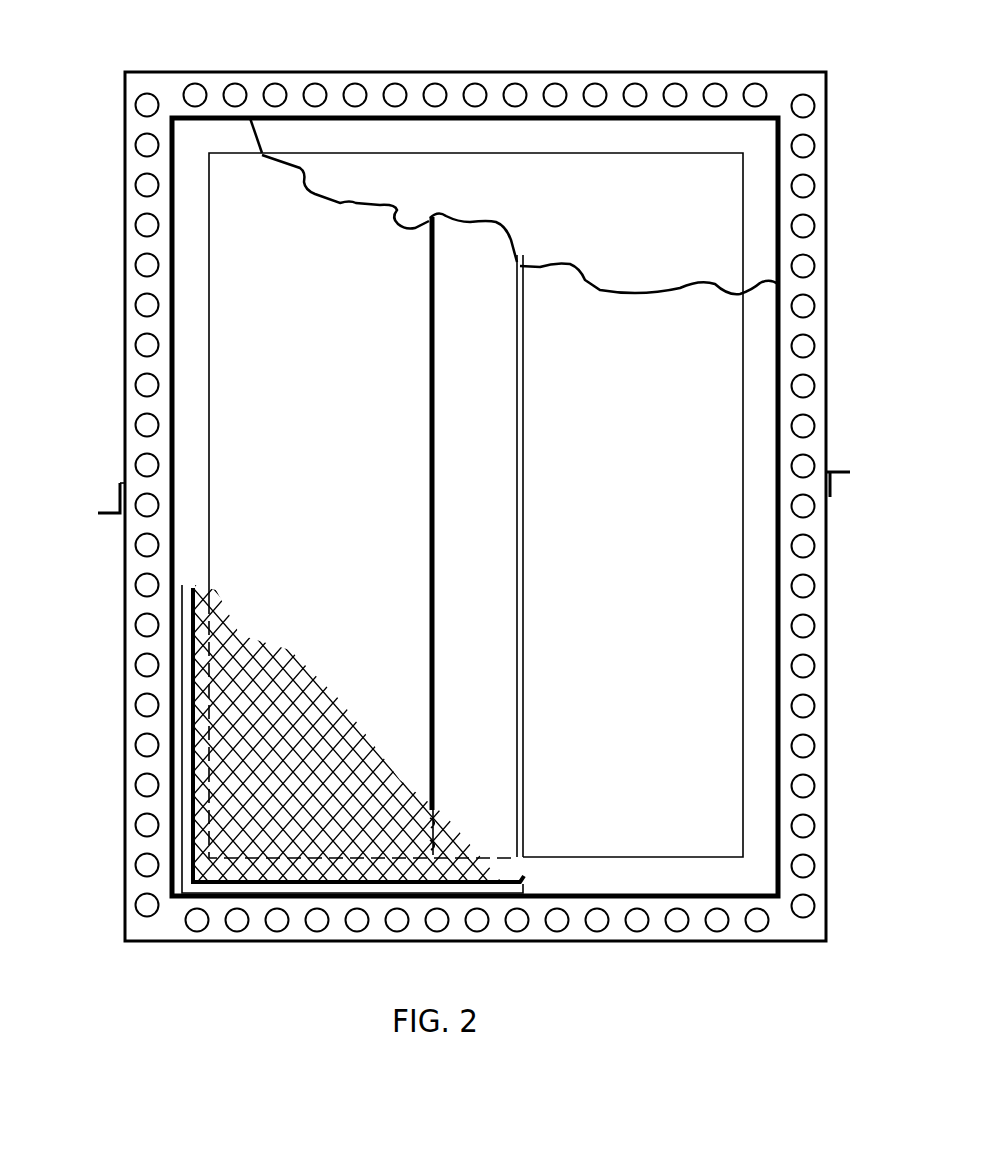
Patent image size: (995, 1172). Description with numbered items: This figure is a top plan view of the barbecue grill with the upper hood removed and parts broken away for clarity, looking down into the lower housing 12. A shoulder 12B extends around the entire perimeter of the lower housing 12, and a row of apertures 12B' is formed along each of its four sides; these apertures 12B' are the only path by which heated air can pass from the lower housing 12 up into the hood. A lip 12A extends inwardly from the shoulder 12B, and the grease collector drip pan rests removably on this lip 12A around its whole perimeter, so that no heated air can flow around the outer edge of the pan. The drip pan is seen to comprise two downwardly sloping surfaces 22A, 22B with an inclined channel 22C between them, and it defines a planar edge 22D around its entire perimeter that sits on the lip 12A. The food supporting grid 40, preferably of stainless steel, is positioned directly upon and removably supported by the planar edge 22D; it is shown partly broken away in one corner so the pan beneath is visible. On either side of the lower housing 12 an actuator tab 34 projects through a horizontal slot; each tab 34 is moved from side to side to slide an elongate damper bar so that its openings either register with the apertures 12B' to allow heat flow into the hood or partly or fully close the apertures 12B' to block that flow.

The lower housing 12 is at (690, 70).
The lip 12A is at (608, 138).
The shoulder 12B is at (475, 474).
The apertures 12B' is at (464, 583).
The downwardly sloping surface 22A is at (313, 441).
The downwardly sloping surface 22B is at (646, 557).
The inclined channel 22C is at (496, 501).
The planar edge 22D is at (190, 286).
The actuator tab 34 is at (104, 510).
The food supporting grid 40 is at (300, 819).